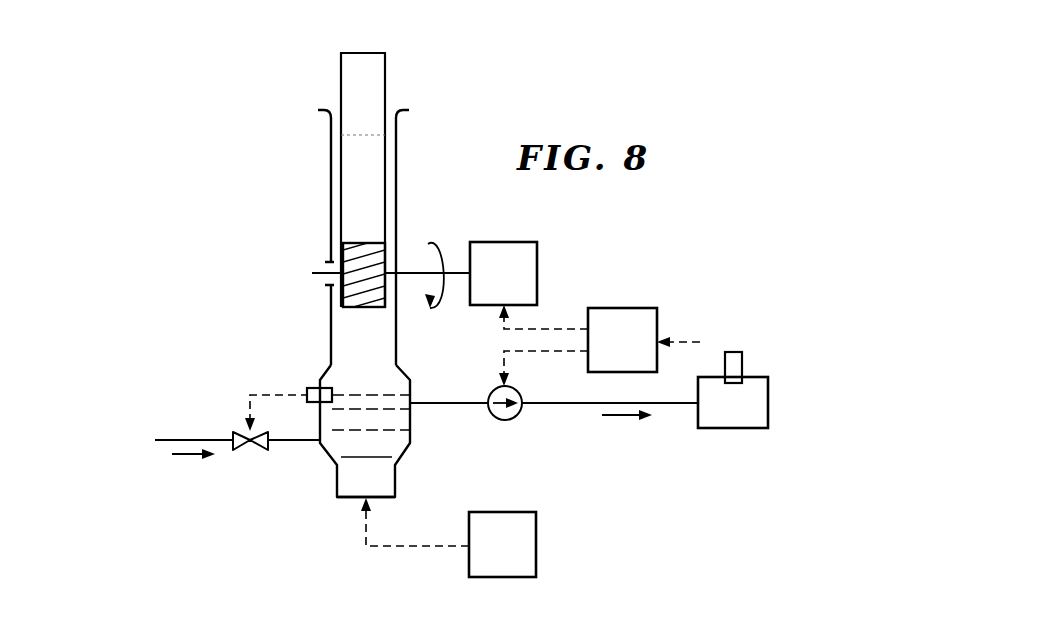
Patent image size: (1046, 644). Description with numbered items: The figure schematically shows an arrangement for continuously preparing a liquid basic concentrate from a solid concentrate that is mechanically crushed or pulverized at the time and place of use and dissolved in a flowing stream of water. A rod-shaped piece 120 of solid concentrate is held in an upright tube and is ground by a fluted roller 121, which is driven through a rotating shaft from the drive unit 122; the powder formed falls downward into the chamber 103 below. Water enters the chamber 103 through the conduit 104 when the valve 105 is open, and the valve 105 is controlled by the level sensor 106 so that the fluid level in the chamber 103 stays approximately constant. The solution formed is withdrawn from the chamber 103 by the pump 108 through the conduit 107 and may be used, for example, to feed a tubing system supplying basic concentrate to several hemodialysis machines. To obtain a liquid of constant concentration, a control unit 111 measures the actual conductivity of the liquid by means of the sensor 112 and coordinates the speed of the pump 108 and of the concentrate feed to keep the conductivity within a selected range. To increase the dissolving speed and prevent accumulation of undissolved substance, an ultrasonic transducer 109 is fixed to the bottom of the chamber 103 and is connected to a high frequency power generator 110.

The chamber 103 is at (398, 436).
The conduit 104 is at (293, 443).
The valve 105 is at (238, 438).
The level sensor 106 is at (307, 390).
The conduit 107 is at (428, 402).
The pump 108 is at (520, 415).
The ultrasonic transducer 109 is at (337, 492).
The high frequency power generator 110 is at (536, 540).
The control unit 111 is at (635, 310).
The sensor 112 is at (737, 422).
The rod-shaped piece of solid concentrate 120 is at (383, 70).
The fluted roller 121 is at (343, 248).
The motor 122 is at (537, 258).